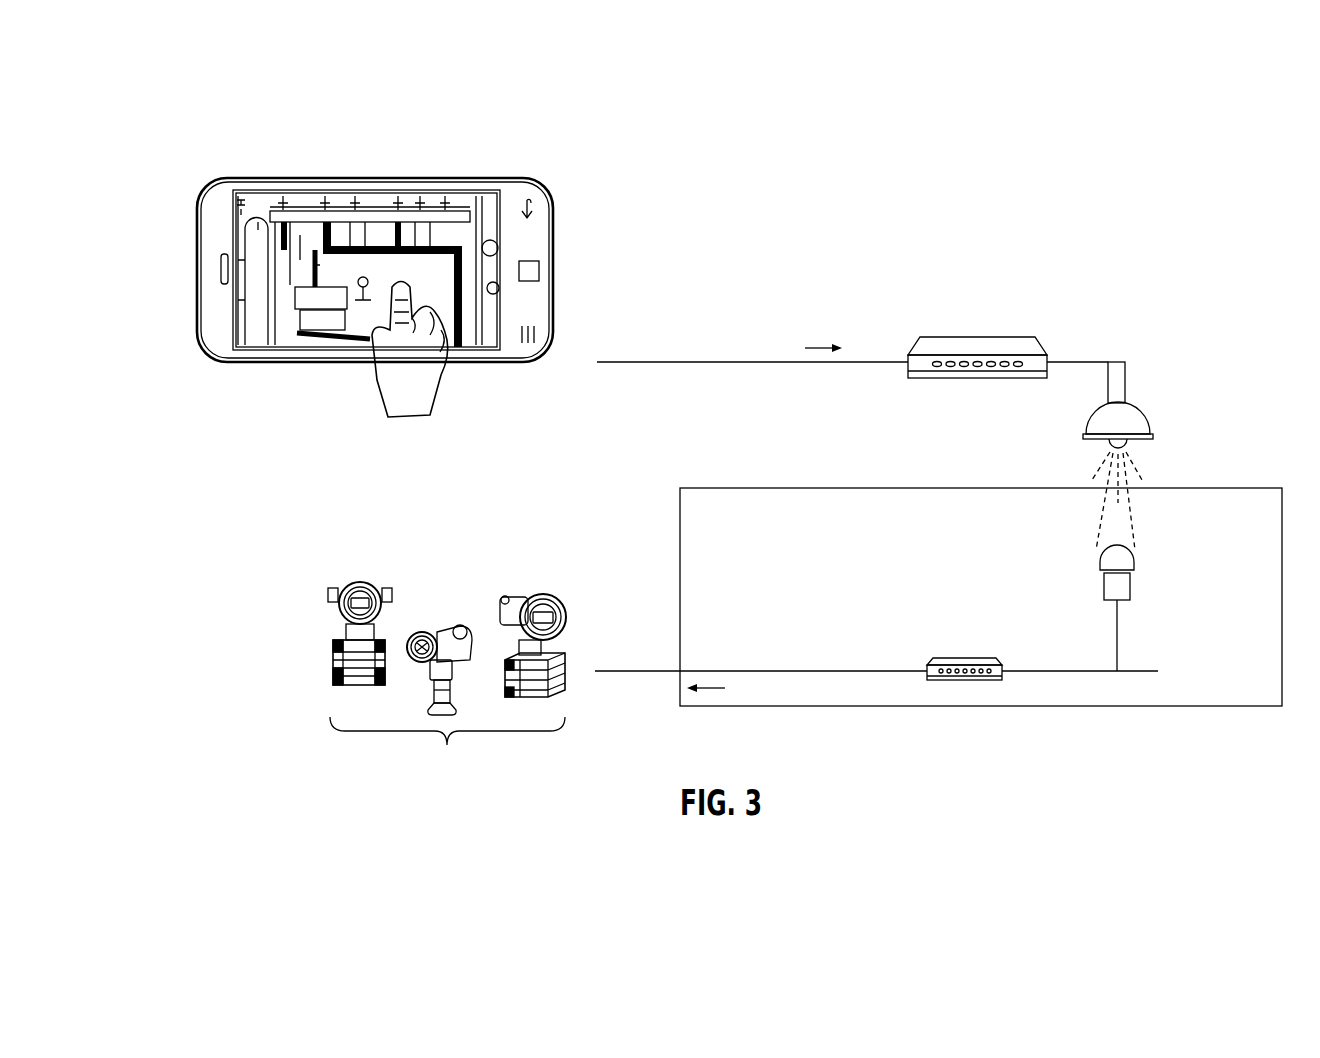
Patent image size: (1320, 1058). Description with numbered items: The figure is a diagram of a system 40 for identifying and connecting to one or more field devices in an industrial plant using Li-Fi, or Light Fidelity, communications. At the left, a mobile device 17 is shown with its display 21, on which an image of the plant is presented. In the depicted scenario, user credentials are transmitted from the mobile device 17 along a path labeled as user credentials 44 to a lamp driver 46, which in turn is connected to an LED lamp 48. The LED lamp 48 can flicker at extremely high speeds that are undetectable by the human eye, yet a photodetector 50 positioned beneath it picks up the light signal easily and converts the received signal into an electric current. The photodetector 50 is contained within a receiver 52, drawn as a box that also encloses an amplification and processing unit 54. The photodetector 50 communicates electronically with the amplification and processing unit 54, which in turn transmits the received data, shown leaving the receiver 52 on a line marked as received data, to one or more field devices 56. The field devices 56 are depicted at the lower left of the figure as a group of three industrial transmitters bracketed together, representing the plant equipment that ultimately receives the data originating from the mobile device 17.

The mobile device 17 is at (176, 293).
The display 21 is at (238, 198).
The system 40 is at (1159, 169).
The user credentials line 44 is at (707, 365).
The lamp driver 46 is at (971, 395).
The LED lamp 48 is at (1134, 405).
The photodetector 50 is at (1160, 535).
The receiver 52 is at (756, 543).
The amplification and processing unit 54 is at (980, 692).
The field devices 56 is at (447, 683).